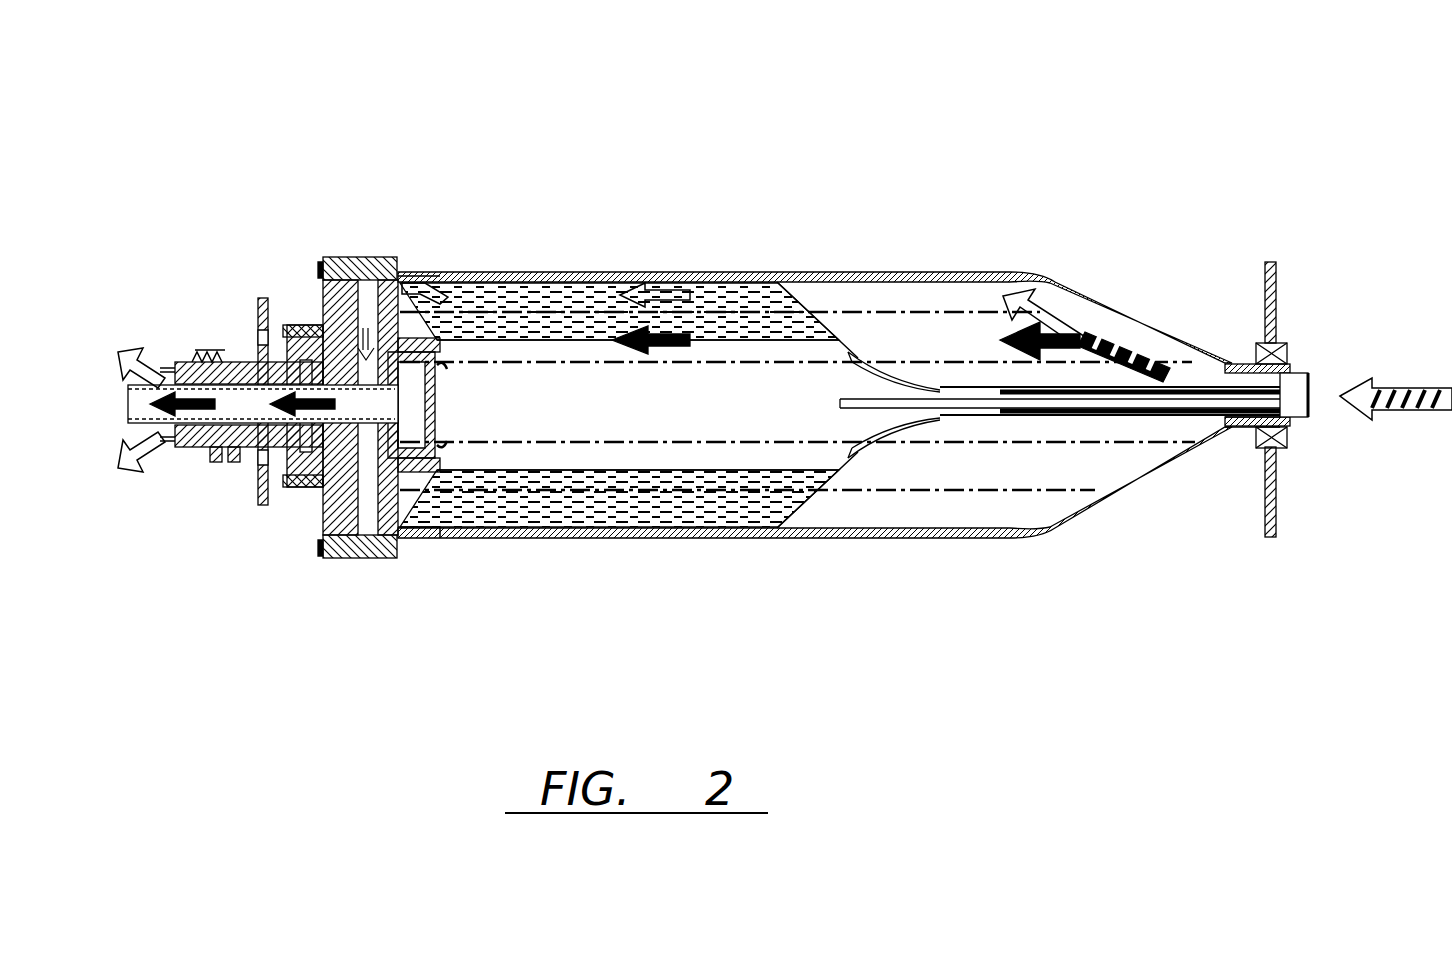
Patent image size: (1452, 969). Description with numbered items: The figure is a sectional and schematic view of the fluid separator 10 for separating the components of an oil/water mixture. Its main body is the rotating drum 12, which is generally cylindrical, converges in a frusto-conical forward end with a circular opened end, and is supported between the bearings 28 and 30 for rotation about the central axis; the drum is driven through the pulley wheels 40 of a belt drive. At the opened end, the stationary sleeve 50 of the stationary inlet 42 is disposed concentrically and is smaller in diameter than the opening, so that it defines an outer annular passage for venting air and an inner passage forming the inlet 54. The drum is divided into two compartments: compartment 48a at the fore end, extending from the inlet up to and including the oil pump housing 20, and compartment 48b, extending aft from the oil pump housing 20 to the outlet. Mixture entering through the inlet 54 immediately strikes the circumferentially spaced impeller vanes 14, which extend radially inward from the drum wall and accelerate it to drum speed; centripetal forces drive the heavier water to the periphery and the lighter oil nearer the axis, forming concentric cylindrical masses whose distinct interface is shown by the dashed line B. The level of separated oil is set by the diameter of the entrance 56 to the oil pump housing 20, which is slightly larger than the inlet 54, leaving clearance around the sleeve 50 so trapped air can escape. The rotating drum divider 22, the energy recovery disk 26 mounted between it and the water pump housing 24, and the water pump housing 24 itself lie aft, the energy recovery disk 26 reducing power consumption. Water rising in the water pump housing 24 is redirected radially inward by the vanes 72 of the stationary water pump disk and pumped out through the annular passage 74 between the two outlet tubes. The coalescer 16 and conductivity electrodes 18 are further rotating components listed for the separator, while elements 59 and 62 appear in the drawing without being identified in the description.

The fluid separator 10 is at (842, 565).
The rotating drum 12 is at (658, 538).
The impeller vanes 14 is at (900, 285).
The coalescer 16 is at (753, 282).
The conductivity electrodes 18 is at (420, 539).
The oil pump housing 20 is at (385, 267).
The rotating drum divider 22 is at (375, 262).
The water pump housing 24 is at (292, 320).
The energy recovery disk 26 is at (338, 263).
The bearing 28 is at (1250, 343).
The bearing 30 is at (242, 338).
The pulley wheels 40 is at (238, 462).
The stationary inlet 42 is at (1300, 420).
The compartment 48a is at (1309, 320).
The compartment 48b is at (133, 340).
The stationary sleeve 50 is at (1309, 370).
The inlet 54 is at (1303, 395).
The entrance 56 is at (440, 364).
The seal 59 is at (408, 417).
The inlet port 62 is at (410, 275).
The vanes 72 is at (268, 460).
The annular passage 74 is at (192, 448).
The oil/water interface B is at (897, 280).